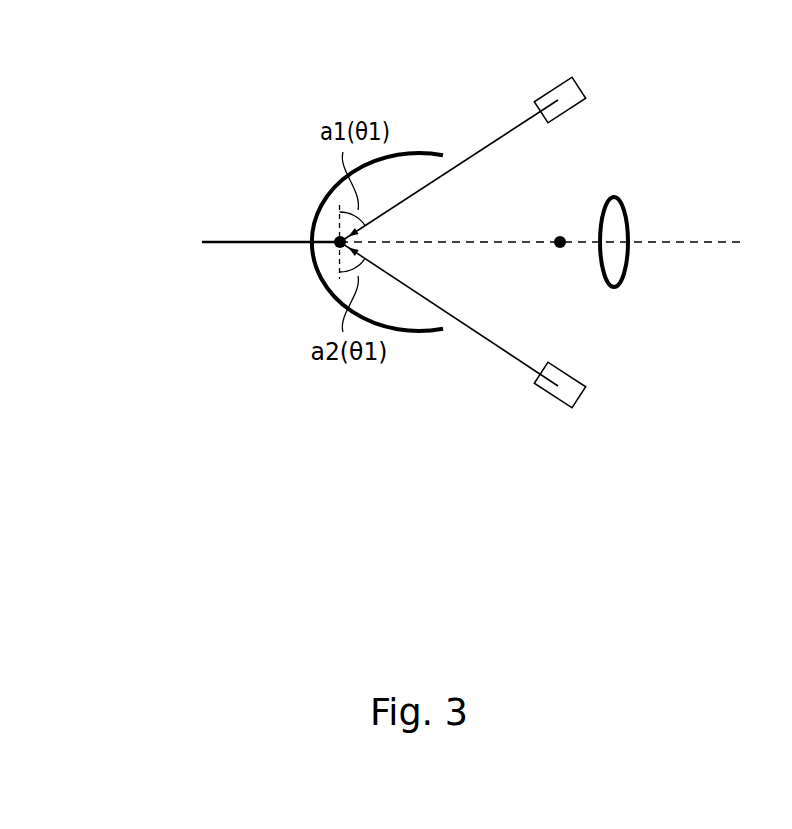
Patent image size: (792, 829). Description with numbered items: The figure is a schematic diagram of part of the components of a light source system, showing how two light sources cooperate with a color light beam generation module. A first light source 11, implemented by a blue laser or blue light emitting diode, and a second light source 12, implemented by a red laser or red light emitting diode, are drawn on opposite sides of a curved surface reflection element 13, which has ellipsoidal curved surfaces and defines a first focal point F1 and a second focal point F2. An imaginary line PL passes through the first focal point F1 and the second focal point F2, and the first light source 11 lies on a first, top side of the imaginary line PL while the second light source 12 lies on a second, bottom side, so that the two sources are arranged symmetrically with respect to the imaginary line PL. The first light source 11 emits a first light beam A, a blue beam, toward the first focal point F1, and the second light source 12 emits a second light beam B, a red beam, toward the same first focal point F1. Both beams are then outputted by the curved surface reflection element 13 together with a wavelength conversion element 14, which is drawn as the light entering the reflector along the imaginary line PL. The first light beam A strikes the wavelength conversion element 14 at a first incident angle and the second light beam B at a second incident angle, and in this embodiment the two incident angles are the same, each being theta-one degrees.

The first light source 11 is at (557, 100).
The second light source 12 is at (557, 392).
The curved surface reflection element 13 is at (353, 395).
The wavelength conversion element 14 is at (183, 250).
The first light beam A is at (487, 145).
The second light beam B is at (485, 343).
The first focal point F1 is at (331, 238).
The second focal point F2 is at (560, 236).
The imaginary line PL is at (720, 240).